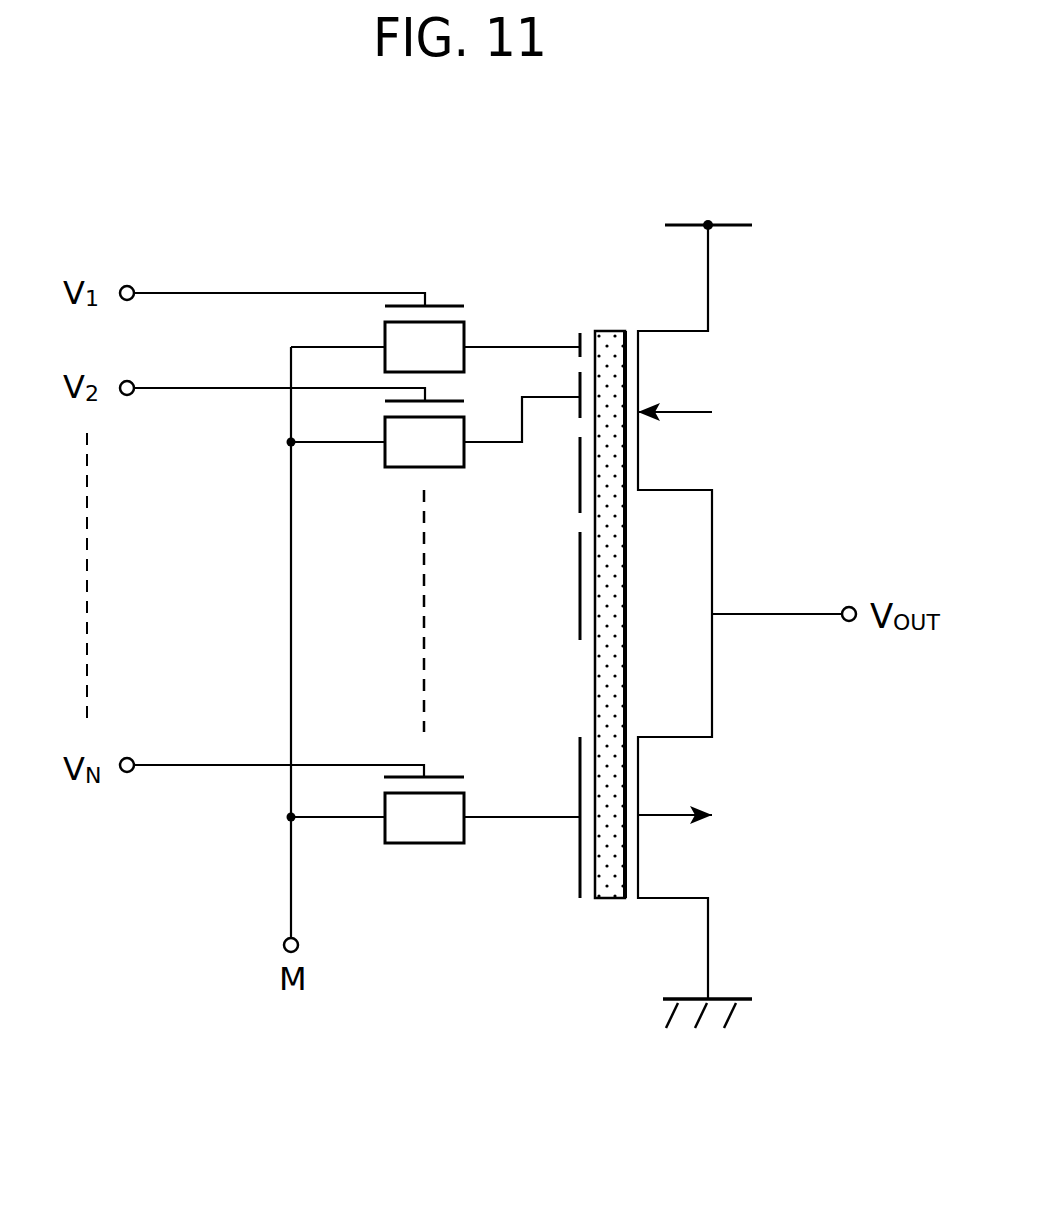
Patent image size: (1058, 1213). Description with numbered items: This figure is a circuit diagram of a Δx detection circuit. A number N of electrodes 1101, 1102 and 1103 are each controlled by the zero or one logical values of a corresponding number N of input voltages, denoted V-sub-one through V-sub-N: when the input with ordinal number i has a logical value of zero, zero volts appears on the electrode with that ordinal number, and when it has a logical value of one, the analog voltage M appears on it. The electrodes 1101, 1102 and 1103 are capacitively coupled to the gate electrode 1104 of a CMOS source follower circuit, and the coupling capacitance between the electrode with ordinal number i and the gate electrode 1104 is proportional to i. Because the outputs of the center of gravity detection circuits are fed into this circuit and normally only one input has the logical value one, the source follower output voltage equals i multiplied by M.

The electrode 1101 is at (357, 332).
The electrode 1102 is at (357, 414).
The electrode 1103 is at (357, 804).
The gate electrode 1104 is at (612, 329).